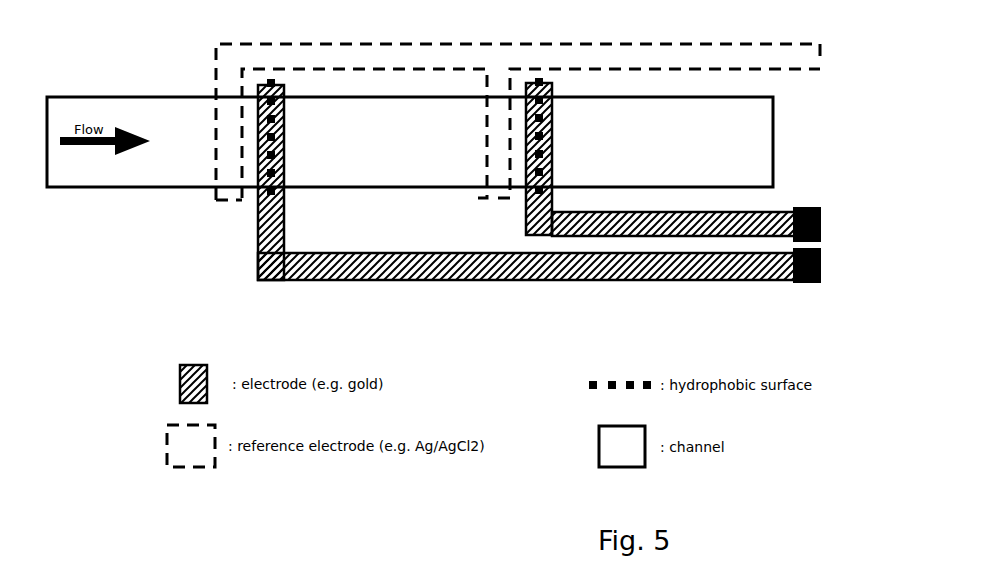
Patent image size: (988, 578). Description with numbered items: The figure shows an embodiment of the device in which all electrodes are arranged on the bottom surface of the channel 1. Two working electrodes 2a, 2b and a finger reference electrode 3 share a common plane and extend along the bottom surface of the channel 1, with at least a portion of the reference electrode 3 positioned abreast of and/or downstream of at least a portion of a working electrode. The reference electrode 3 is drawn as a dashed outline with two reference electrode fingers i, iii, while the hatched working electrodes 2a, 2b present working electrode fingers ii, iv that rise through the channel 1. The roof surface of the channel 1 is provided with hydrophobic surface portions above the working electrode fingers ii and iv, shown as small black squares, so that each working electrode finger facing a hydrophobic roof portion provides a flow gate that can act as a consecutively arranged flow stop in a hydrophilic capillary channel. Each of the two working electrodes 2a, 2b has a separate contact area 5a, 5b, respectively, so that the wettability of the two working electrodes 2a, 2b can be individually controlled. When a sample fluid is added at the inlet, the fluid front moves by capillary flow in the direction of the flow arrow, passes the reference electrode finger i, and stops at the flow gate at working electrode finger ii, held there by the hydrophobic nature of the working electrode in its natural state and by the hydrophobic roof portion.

The channel 1 is at (86, 188).
The reference electrode 3 is at (378, 57).
The reference electrode finger i is at (232, 166).
The working electrode finger ii is at (262, 231).
The reference electrode finger iii is at (497, 162).
The working electrode finger iv is at (547, 232).
The working electrode 2a is at (368, 262).
The working electrode 2b is at (761, 211).
The contact area 5a is at (821, 262).
The contact area 5b is at (821, 219).